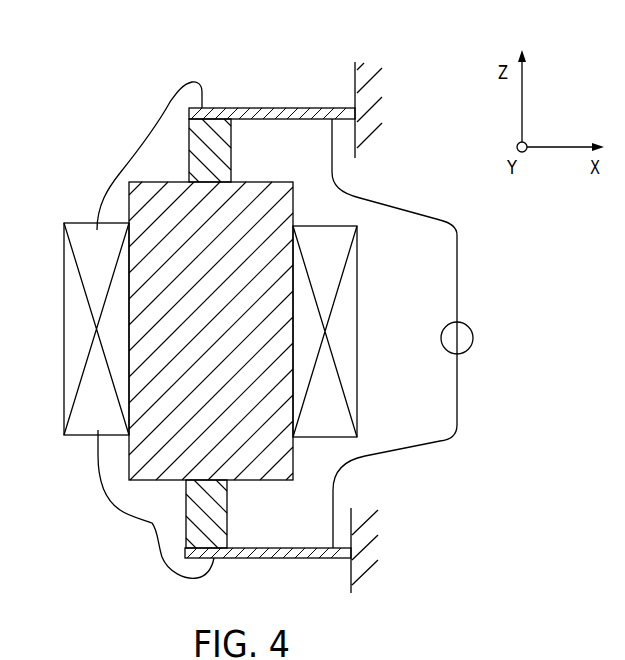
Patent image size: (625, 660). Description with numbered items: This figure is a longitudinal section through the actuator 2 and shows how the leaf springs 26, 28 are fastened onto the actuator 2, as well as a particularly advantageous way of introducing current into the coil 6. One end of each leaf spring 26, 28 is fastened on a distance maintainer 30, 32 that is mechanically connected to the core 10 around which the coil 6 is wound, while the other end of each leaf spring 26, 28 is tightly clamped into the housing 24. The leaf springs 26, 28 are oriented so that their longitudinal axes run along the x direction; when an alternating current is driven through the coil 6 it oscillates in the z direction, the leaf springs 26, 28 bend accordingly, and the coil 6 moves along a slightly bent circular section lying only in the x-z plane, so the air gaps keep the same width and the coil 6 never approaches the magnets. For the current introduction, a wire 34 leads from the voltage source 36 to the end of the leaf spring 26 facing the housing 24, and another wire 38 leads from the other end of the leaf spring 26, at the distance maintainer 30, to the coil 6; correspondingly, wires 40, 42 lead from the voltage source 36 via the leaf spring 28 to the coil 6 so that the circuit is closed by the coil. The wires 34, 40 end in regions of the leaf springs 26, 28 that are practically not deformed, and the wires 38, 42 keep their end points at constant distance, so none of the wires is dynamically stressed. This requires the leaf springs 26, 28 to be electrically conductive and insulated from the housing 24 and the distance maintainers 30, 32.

The actuator 2 is at (326, 77).
The coil 6 is at (108, 320).
The core 10 is at (193, 373).
The housing 24 is at (372, 85).
The leaf spring 26 is at (223, 108).
The leaf spring 28 is at (257, 559).
The distance maintainer 30 is at (213, 168).
The distance maintainer 32 is at (220, 493).
The wire 34 is at (453, 227).
The voltage source 36 is at (474, 336).
The wire 38 is at (158, 122).
The wire 40 is at (415, 448).
The wire 42 is at (130, 522).